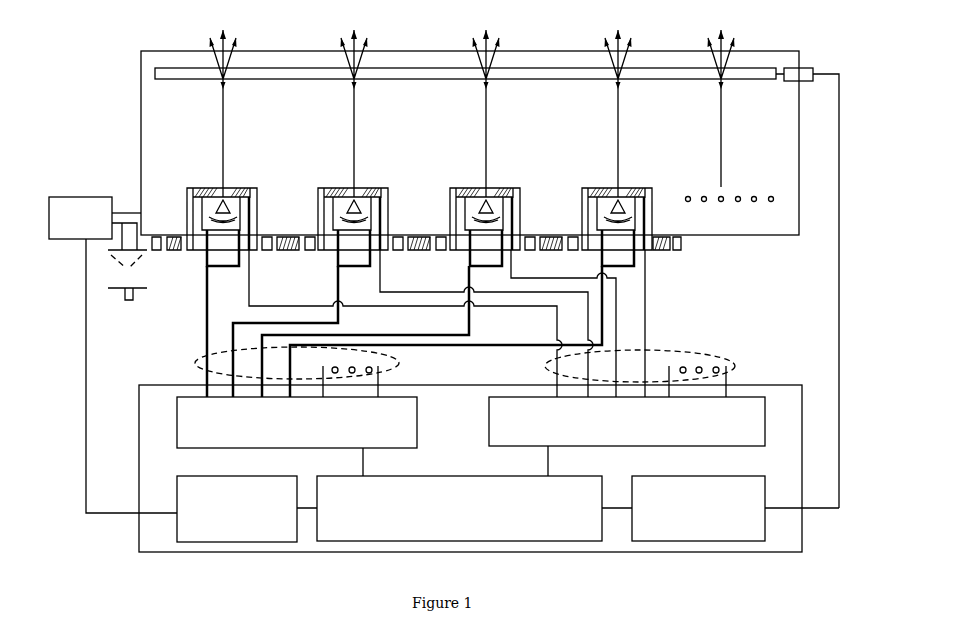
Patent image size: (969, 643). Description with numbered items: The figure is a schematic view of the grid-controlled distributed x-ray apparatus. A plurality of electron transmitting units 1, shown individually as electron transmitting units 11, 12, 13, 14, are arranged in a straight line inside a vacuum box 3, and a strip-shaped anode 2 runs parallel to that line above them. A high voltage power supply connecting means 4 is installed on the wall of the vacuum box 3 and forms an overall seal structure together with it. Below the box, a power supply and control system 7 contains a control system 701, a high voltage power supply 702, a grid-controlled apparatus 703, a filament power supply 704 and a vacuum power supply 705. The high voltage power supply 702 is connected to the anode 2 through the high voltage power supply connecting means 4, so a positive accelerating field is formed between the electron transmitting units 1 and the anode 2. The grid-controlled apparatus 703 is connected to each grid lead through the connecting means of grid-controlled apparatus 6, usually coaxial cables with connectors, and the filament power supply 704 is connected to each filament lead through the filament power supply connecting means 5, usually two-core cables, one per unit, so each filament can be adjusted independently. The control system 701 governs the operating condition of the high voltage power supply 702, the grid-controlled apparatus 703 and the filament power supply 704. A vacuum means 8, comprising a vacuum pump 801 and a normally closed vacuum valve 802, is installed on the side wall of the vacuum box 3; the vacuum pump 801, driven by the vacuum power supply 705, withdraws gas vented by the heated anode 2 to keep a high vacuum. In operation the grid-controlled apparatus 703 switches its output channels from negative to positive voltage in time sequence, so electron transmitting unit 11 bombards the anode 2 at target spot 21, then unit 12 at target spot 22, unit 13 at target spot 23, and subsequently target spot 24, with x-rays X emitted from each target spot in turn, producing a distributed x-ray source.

The electron transmitting unit 1 is at (392, 214).
The anode 2 is at (165, 80).
The vacuum box 3 is at (142, 55).
The high voltage power supply connecting means 4 is at (815, 68).
The filament power supply connecting means 5 is at (399, 363).
The connecting means of grid-controlled apparatus 6 is at (735, 366).
The power supply and control system 7 is at (800, 538).
The vacuum means 8 is at (113, 355).
The electron transmitting unit 11 is at (234, 215).
The electron transmitting unit 12 is at (365, 214).
The electron transmitting unit 13 is at (497, 214).
The electron transmitting unit 14 is at (629, 215).
The target spot 21 is at (239, 113).
The target spot 22 is at (370, 113).
The target spot 23 is at (502, 113).
The target spot 24 is at (634, 113).
The control system 701 is at (459, 508).
The high voltage power supply 702 is at (698, 508).
The grid-controlled apparatus 703 is at (627, 421).
The filament power supply 704 is at (297, 422).
The vacuum power supply 705 is at (237, 509).
The vacuum pump 801 is at (95, 218).
The vacuum valve 802 is at (127, 261).
The x-ray X is at (493, 33).